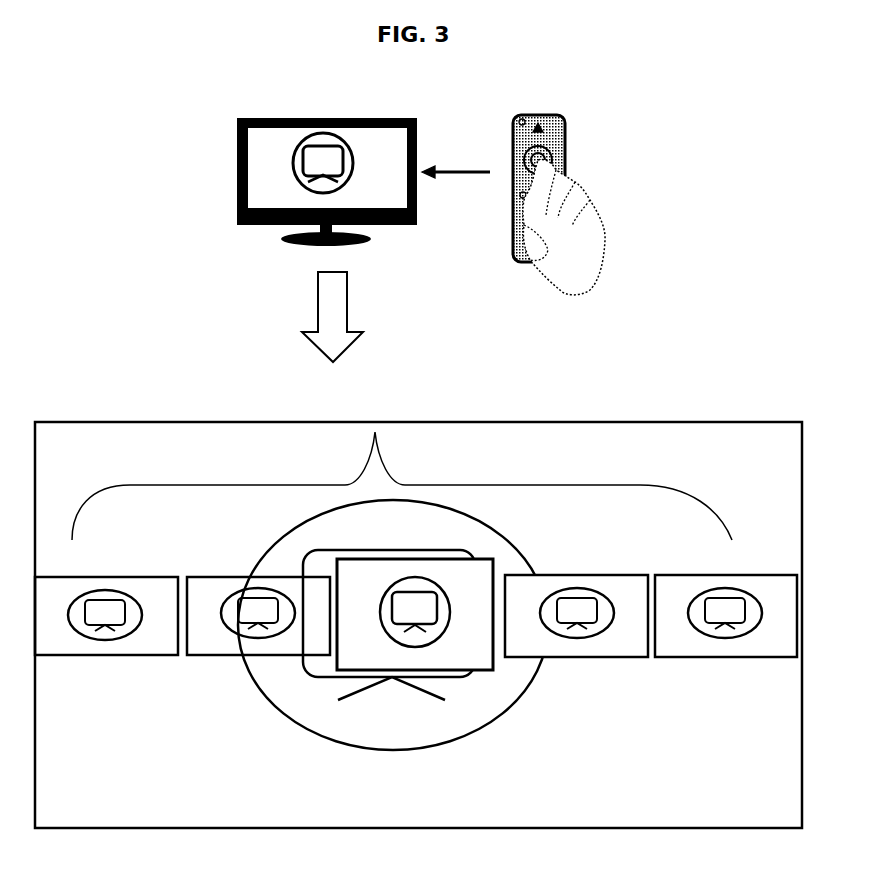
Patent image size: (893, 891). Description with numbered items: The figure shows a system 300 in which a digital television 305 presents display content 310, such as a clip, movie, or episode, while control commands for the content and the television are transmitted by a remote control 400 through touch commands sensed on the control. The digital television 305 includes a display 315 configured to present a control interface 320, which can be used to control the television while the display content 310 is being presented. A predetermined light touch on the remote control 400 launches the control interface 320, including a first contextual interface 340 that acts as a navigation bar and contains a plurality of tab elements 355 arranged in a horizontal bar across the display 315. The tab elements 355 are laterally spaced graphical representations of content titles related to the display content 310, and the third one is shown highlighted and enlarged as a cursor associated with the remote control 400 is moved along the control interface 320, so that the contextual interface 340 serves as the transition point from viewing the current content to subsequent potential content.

The system 300 is at (186, 118).
The digital television 305 is at (238, 185).
The display content 310 is at (322, 152).
The display 315 is at (133, 432).
The control interface 320 is at (118, 670).
The contextual interface 340 is at (362, 425).
The tab elements 355 is at (416, 588).
The remote control 400 is at (562, 125).